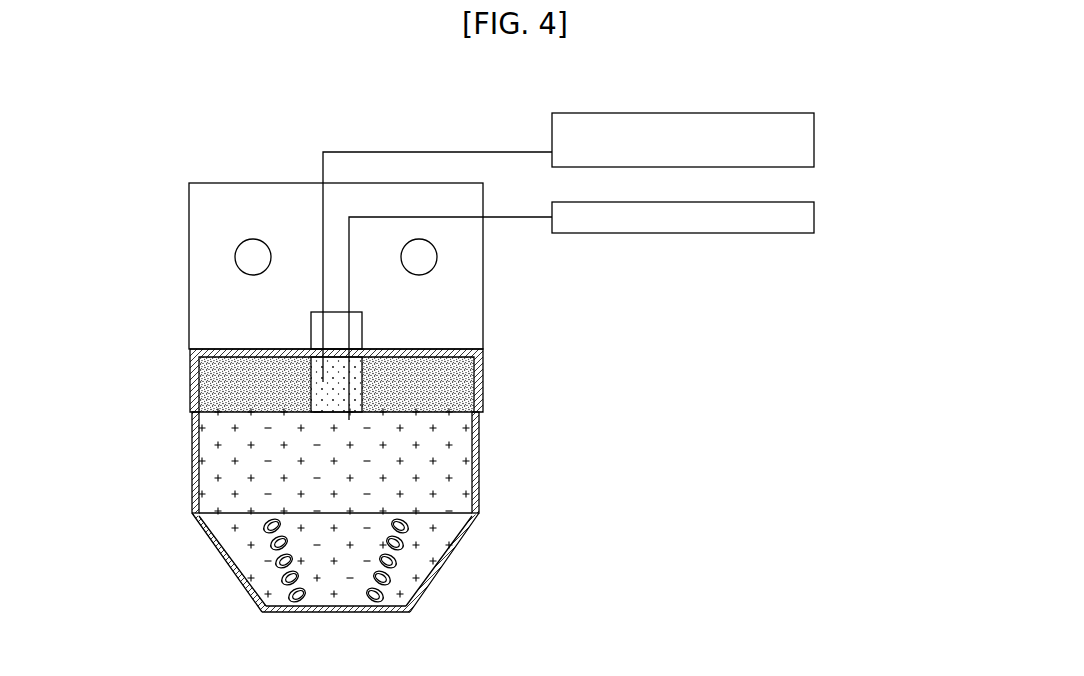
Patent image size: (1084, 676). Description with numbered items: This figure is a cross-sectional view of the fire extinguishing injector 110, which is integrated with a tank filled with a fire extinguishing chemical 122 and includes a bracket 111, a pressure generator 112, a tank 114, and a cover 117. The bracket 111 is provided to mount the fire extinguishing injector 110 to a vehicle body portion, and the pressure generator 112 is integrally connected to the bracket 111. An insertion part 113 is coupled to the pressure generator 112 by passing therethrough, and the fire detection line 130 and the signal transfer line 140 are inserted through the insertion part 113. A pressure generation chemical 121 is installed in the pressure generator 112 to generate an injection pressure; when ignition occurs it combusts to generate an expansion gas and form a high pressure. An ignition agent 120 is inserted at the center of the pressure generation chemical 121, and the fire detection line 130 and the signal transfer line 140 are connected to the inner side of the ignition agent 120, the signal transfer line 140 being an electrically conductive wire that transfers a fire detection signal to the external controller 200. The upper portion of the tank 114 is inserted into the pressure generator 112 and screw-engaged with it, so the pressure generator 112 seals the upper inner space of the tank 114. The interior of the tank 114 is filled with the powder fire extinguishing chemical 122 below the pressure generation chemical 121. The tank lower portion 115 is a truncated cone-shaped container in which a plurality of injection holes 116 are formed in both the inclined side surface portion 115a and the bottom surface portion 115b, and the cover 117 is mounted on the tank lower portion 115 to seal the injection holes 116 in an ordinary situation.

The fire extinguishing injector 110 is at (818, 141).
The bracket 111 is at (463, 297).
The pressure generator 112 is at (483, 385).
The insertion part 113 is at (362, 328).
The tank 114 is at (485, 471).
The tank lower portion 115 is at (411, 568).
The inclined side surface portion 115a is at (447, 562).
The bottom surface portion 115b is at (397, 600).
The injection holes 116 is at (278, 544).
The cover 117 is at (455, 548).
The ignition agent 120 is at (327, 400).
The pressure generation chemical 121 is at (228, 368).
The fire extinguishing chemical 122 is at (242, 488).
The fire detection line 130 is at (383, 151).
The signal transfer line 140 is at (528, 216).
The controller 200 is at (814, 215).